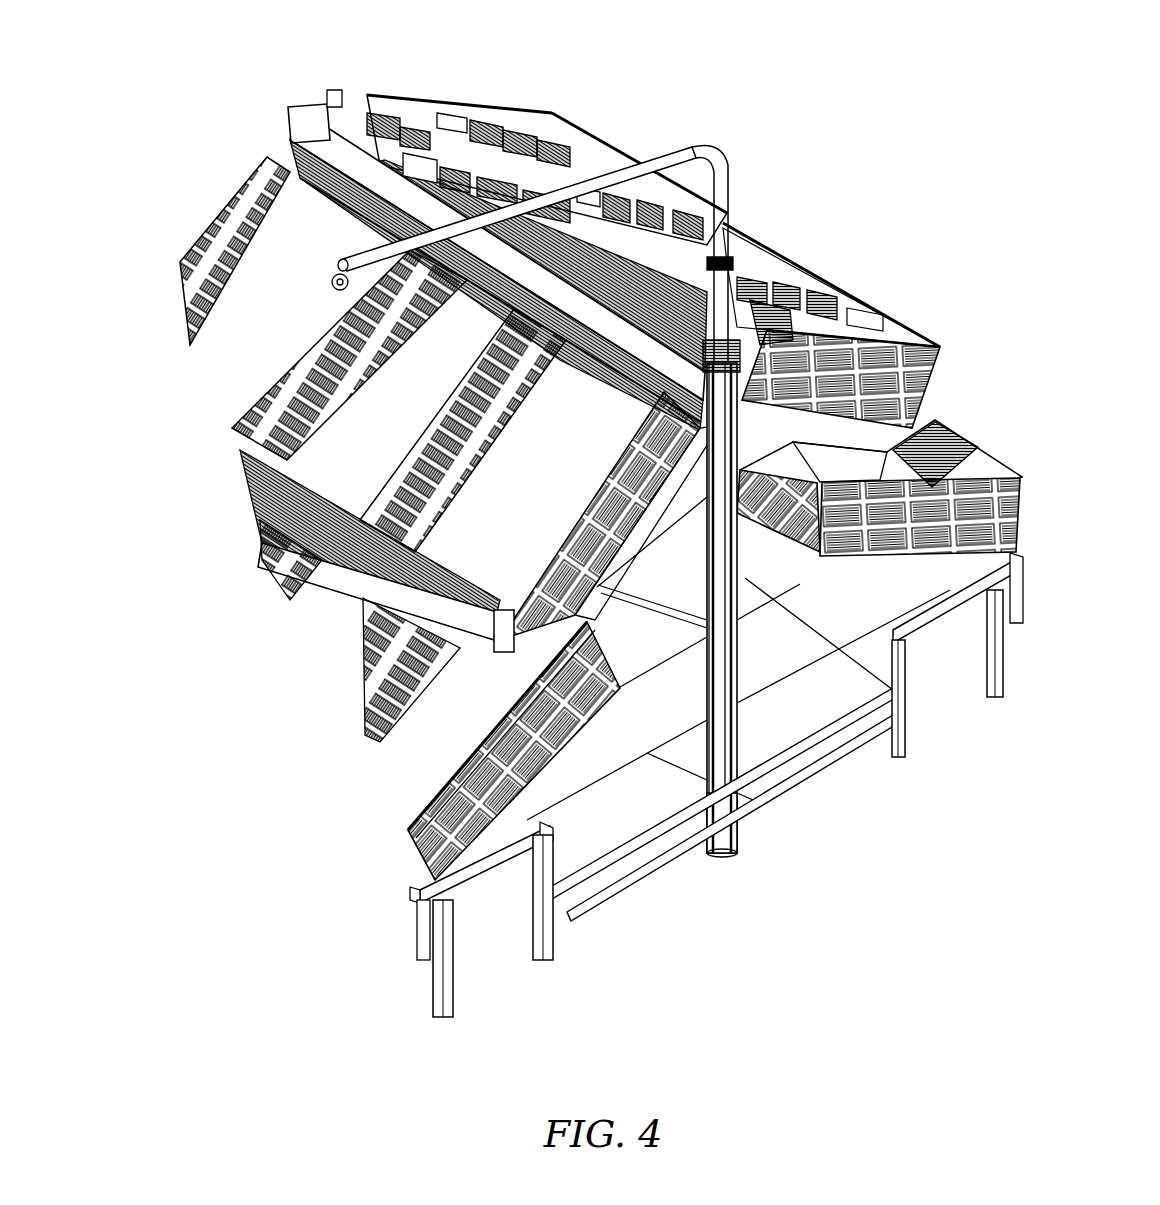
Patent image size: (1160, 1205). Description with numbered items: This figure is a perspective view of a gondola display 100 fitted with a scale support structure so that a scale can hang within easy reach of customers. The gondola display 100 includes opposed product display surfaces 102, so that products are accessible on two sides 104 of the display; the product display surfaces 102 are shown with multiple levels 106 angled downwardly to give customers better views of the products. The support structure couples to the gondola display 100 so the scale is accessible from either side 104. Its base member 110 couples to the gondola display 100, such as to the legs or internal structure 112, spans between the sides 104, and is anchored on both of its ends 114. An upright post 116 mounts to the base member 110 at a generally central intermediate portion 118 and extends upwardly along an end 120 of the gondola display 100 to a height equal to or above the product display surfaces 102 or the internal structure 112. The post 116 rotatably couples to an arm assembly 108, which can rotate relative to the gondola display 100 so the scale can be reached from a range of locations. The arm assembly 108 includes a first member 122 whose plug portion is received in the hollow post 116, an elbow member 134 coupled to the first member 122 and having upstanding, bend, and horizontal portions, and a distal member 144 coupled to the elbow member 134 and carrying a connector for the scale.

The gondola display 100 is at (597, 140).
The product display surfaces 102 is at (440, 552).
The sides 104 is at (270, 557).
The levels 106 is at (263, 492).
The arm assembly 108 is at (740, 170).
The base member 110 is at (643, 863).
The internal structure 112 is at (593, 780).
The ends 114 is at (563, 917).
The upright post 116 is at (737, 747).
The intermediate portion 118 is at (747, 817).
The end 120 is at (773, 650).
The first member 122 is at (793, 247).
The elbow member 134 is at (710, 147).
The distal member 144 is at (420, 237).